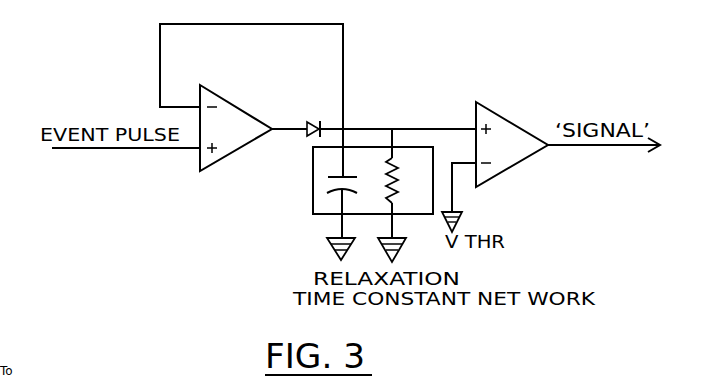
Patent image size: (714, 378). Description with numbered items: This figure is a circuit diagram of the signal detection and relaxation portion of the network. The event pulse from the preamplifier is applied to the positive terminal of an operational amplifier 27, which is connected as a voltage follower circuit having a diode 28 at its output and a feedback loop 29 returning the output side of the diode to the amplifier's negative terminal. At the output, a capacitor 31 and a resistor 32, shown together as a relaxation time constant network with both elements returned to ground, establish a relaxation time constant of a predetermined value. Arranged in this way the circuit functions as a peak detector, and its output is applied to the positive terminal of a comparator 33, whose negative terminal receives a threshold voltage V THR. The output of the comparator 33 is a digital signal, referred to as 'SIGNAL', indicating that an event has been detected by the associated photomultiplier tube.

The operational amplifier 27 is at (236, 128).
The diode 28 is at (316, 121).
The feedback loop 29 is at (344, 45).
The capacitor 31 is at (330, 180).
The resistor 32 is at (398, 182).
The comparator 33 is at (512, 144).